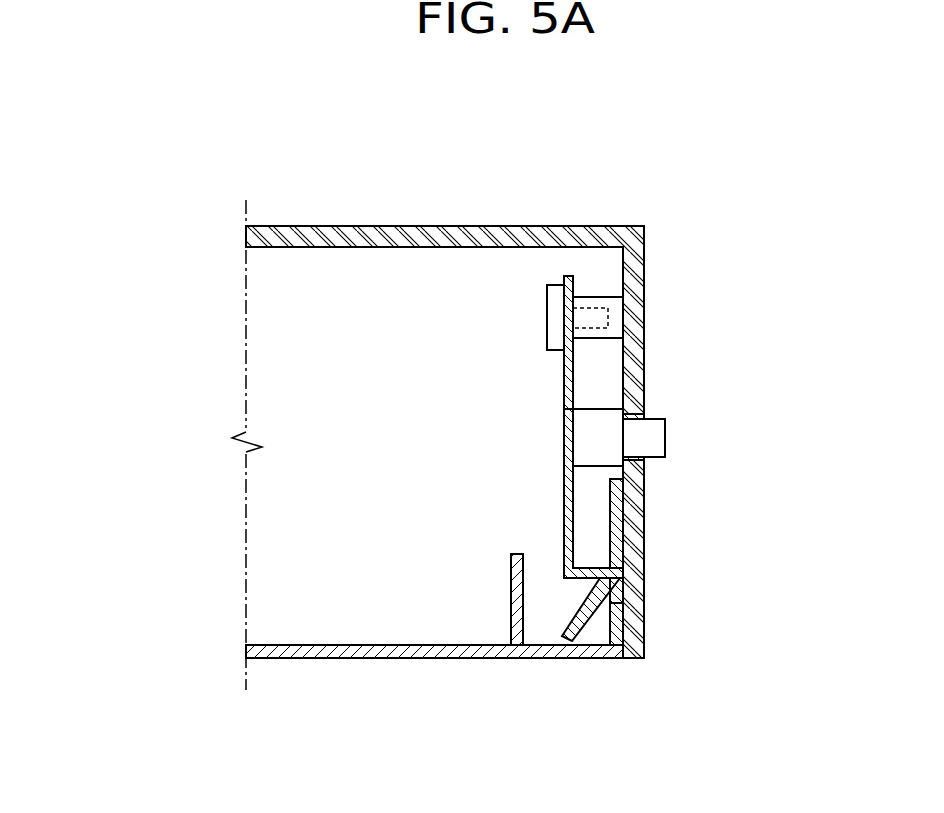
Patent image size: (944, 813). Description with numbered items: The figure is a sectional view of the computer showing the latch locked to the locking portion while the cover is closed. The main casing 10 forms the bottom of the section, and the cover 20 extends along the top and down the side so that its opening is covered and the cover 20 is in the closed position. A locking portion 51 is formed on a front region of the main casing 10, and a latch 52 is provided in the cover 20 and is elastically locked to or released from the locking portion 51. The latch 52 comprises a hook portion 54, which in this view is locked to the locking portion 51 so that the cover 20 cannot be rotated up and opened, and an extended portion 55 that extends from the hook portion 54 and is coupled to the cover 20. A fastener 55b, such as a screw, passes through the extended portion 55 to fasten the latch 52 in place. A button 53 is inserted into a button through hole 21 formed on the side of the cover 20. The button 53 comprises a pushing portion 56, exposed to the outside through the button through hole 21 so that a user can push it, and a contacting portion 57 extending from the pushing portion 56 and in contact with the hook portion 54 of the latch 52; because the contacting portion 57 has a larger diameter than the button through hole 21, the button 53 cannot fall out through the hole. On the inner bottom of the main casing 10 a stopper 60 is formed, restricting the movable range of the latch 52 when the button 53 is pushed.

The main casing 10 is at (362, 660).
The cover 20 is at (644, 250).
The button through hole 21 is at (630, 417).
The locking portion 51 is at (615, 602).
The latch 52 is at (519, 427).
The button 53 is at (673, 490).
The hook portion 54 is at (545, 493).
The extended portion 55 is at (563, 344).
The fastener 55b is at (546, 320).
The pushing portion 56 is at (663, 443).
The contacting portion 57 is at (598, 452).
The stopper 60 is at (511, 601).